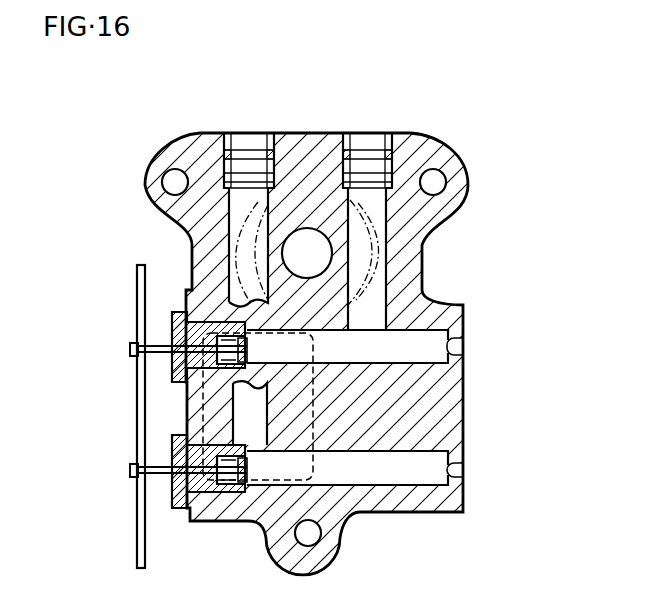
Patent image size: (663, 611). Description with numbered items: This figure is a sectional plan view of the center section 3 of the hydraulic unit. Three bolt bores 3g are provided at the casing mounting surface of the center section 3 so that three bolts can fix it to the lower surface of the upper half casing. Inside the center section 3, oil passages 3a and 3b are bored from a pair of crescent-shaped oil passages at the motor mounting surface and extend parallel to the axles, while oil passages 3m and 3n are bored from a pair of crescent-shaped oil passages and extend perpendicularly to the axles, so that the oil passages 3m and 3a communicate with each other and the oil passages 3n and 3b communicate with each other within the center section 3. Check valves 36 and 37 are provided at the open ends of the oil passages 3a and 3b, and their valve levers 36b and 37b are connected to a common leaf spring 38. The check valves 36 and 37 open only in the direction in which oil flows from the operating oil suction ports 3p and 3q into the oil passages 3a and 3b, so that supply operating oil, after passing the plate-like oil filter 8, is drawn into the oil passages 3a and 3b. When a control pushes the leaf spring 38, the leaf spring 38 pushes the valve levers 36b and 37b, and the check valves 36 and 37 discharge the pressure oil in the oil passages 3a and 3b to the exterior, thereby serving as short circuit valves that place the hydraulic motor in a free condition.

The center section 3 is at (311, 131).
The bolt bores 3g is at (163, 181).
The oil passage 3n is at (267, 199).
The oil passage 3m is at (383, 215).
The oil passage 3a is at (355, 347).
The oil passage 3b is at (355, 470).
The operating oil suction port 3p is at (259, 352).
The operating oil suction port 3q is at (258, 472).
The plate-like oil filter 8 is at (316, 407).
The check valve 36 is at (182, 382).
The valve lever 36b is at (131, 354).
The check valve 37 is at (182, 509).
The valve lever 37b is at (131, 475).
The leaf spring 38 is at (137, 318).